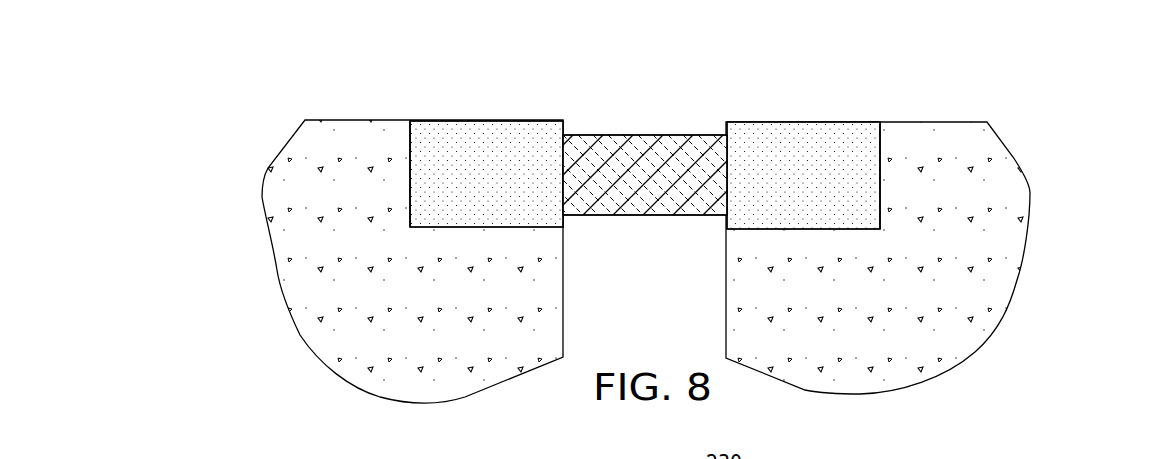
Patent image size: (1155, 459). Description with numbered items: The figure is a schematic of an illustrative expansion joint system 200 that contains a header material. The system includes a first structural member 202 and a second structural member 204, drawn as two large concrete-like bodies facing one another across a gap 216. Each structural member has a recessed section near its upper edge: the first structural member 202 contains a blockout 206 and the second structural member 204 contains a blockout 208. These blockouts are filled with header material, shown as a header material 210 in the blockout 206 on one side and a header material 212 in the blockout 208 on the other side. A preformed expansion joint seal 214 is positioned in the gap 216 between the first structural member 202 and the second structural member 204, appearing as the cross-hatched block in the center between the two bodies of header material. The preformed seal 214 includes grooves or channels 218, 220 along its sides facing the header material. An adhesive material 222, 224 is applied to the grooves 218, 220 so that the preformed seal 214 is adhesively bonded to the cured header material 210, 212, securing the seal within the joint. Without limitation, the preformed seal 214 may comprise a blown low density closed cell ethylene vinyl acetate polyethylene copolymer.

The expansion joint system 200 is at (503, 78).
The first structural member 202 is at (275, 265).
The second structural member 204 is at (1018, 250).
The blockout 206 is at (410, 157).
The blockout 208 is at (880, 138).
The header material 210 is at (475, 143).
The header material 212 is at (825, 138).
The preformed expansion joint seal 214 is at (631, 218).
The gap 216 is at (664, 104).
The groove 218 is at (565, 150).
The groove 220 is at (713, 137).
The adhesive material 222 is at (567, 218).
The adhesive material 224 is at (709, 218).